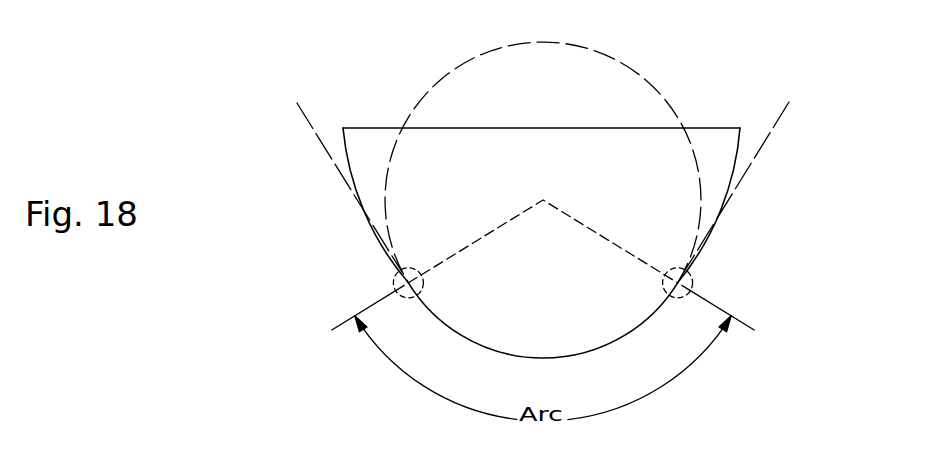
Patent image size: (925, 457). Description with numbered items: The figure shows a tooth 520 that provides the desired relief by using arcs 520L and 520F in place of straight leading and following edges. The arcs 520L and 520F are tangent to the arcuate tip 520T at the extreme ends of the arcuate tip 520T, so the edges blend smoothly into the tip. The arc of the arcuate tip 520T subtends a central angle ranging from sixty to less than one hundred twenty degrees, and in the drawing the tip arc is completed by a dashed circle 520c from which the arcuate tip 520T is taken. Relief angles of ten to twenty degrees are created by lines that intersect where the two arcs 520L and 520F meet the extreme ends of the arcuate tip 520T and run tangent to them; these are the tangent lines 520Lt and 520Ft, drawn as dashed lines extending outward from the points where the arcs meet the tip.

The tooth 520 is at (750, 301).
The circle 520c is at (504, 46).
The arcuate tip 520T is at (578, 357).
The arc 520F is at (367, 208).
The tangent line 520Ft is at (349, 196).
The arc 520L is at (717, 217).
The tangent line 520Lt is at (730, 203).